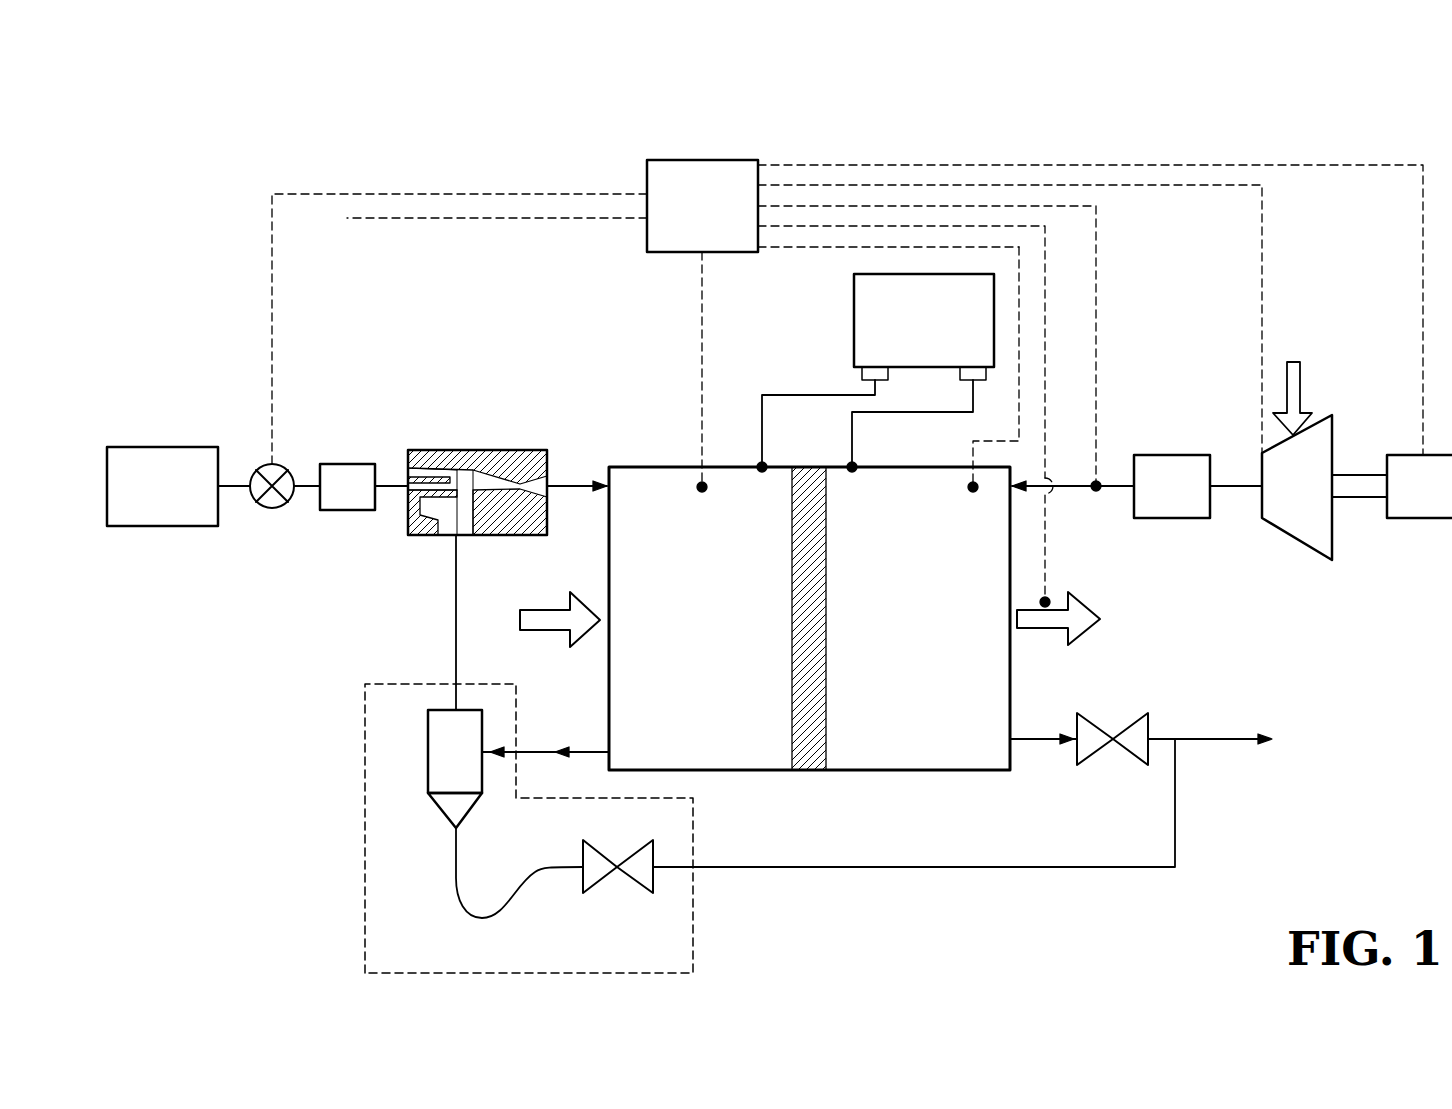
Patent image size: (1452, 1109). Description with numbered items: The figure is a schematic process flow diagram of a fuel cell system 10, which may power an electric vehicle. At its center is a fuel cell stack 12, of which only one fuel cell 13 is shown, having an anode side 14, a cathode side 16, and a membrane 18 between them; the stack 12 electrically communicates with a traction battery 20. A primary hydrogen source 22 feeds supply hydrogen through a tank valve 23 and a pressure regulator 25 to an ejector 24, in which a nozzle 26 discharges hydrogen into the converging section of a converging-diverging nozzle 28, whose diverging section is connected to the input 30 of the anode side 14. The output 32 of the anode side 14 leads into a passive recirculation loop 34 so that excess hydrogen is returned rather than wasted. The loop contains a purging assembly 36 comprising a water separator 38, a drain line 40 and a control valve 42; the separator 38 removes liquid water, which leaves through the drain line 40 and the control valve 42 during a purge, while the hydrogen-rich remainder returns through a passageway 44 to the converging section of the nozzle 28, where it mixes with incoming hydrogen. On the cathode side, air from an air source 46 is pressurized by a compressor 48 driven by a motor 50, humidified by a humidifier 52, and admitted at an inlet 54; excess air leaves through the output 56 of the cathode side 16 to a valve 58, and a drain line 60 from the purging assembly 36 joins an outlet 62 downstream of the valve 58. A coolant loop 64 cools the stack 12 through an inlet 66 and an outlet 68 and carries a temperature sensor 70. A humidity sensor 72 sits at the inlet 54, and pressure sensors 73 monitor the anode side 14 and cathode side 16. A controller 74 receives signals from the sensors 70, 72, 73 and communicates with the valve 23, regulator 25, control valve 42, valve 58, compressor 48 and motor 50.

The fuel cell system 10 is at (515, 122).
The fuel cell stack 12 is at (652, 462).
The fuel cell 13 is at (728, 467).
The anode side 14 is at (707, 620).
The cathode side 16 is at (918, 620).
The membrane 18 is at (810, 772).
The traction battery 20 is at (924, 327).
The primary hydrogen source 22 is at (163, 447).
The tank valve 23 is at (254, 470).
The ejector 24 is at (457, 446).
The pressure regulator 25 is at (347, 464).
The nozzle 26 is at (440, 471).
The converging-diverging nozzle 28 is at (470, 484).
The input of the anode side 30 is at (603, 490).
The output of the anode side 32 is at (604, 757).
The recirculation loop 34 is at (320, 622).
The purging assembly 36 is at (365, 808).
The water separator 38 is at (455, 769).
The drain line 40 is at (456, 850).
The control valve 42 is at (617, 867).
The passageway 44 is at (456, 634).
The air source 46 is at (1300, 392).
The compressor 48 is at (1298, 487).
The motor 50 is at (1419, 486).
The humidifier 52 is at (1172, 486).
The inlet 54 is at (1125, 486).
The output of the cathode side 56 is at (1042, 742).
The valve 58 is at (1110, 742).
The drain line 60 is at (740, 868).
The outlet 62 is at (1210, 740).
The coolant loop 64 is at (1085, 635).
The inlet 66 is at (518, 620).
The outlet 68 is at (1082, 605).
The temperature sensor 70 is at (1045, 600).
The humidity sensor 72 is at (1096, 486).
The pressure sensors 73 is at (702, 489).
The controller 74 is at (847, 323).